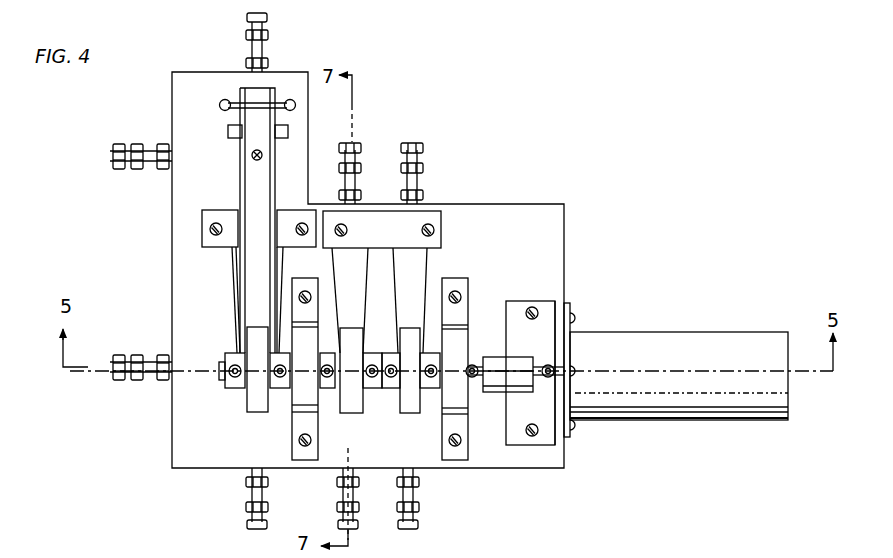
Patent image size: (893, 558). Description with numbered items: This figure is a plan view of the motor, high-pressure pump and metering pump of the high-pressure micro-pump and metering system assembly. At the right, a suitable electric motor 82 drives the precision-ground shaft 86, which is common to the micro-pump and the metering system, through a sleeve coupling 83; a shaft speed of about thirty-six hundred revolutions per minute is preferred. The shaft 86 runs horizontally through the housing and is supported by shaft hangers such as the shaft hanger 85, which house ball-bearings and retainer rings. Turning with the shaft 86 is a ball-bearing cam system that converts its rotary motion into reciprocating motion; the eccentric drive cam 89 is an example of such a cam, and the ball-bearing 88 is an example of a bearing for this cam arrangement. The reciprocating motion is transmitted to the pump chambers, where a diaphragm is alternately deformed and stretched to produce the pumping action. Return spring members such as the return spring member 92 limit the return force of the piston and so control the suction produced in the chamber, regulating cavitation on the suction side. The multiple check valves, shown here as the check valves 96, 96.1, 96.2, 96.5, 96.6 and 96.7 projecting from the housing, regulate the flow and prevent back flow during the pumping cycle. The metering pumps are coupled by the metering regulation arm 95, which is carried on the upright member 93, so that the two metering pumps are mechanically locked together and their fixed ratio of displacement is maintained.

The electric motor 82 is at (679, 376).
The sleeve coupling 83 is at (502, 362).
The shaft hanger 85 is at (293, 404).
The shaft 86 is at (232, 386).
The ball-bearing 88 is at (415, 405).
The eccentric drive cam 89 is at (392, 388).
The return spring member 92 is at (418, 268).
The vertical lever bar 93 is at (231, 298).
The metering regulation arm 95 is at (276, 119).
The check valve 96 is at (360, 522).
The check valve 96.1 is at (412, 504).
The check valve 96.2 is at (252, 523).
The check valve 96.5 is at (260, 50).
The check valve 96.6 is at (418, 146).
The check valve 96.7 is at (357, 142).